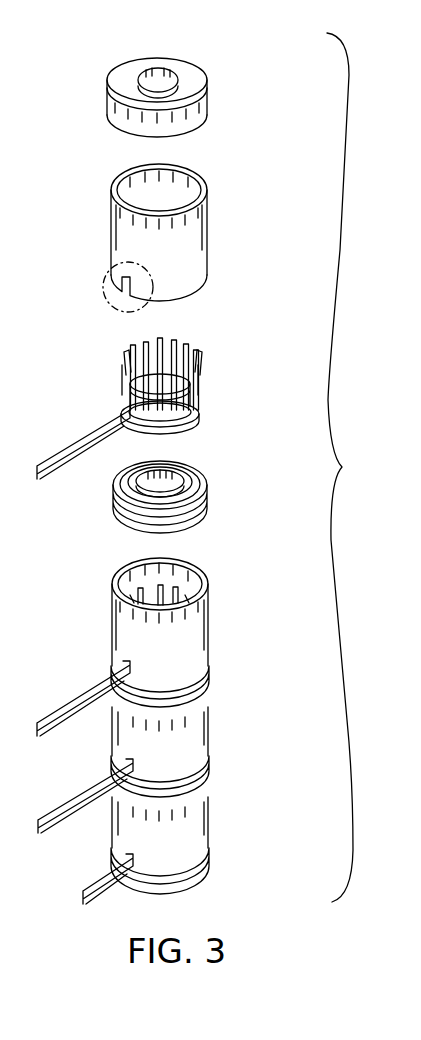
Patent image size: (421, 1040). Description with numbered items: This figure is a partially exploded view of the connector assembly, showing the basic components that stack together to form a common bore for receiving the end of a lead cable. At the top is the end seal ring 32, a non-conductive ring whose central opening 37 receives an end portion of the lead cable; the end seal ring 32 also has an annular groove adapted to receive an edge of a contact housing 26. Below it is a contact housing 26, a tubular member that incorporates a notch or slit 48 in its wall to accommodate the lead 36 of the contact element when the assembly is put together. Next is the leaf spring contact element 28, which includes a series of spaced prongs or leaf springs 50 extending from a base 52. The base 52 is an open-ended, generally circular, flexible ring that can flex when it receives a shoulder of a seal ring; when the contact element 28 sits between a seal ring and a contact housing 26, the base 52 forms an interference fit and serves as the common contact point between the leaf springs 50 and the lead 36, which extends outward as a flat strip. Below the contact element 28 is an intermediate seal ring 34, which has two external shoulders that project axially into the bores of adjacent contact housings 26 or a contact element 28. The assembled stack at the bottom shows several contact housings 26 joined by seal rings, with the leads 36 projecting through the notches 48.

The contact housing 26 is at (158, 238).
The leaf spring contact element 28 is at (157, 437).
The end seal ring 32 is at (188, 77).
The intermediate seal ring 34 is at (207, 491).
The lead 36 is at (38, 481).
The central opening 37 is at (157, 85).
The notch 48 is at (122, 291).
The leaf springs 50 is at (131, 370).
The base 52 is at (195, 415).